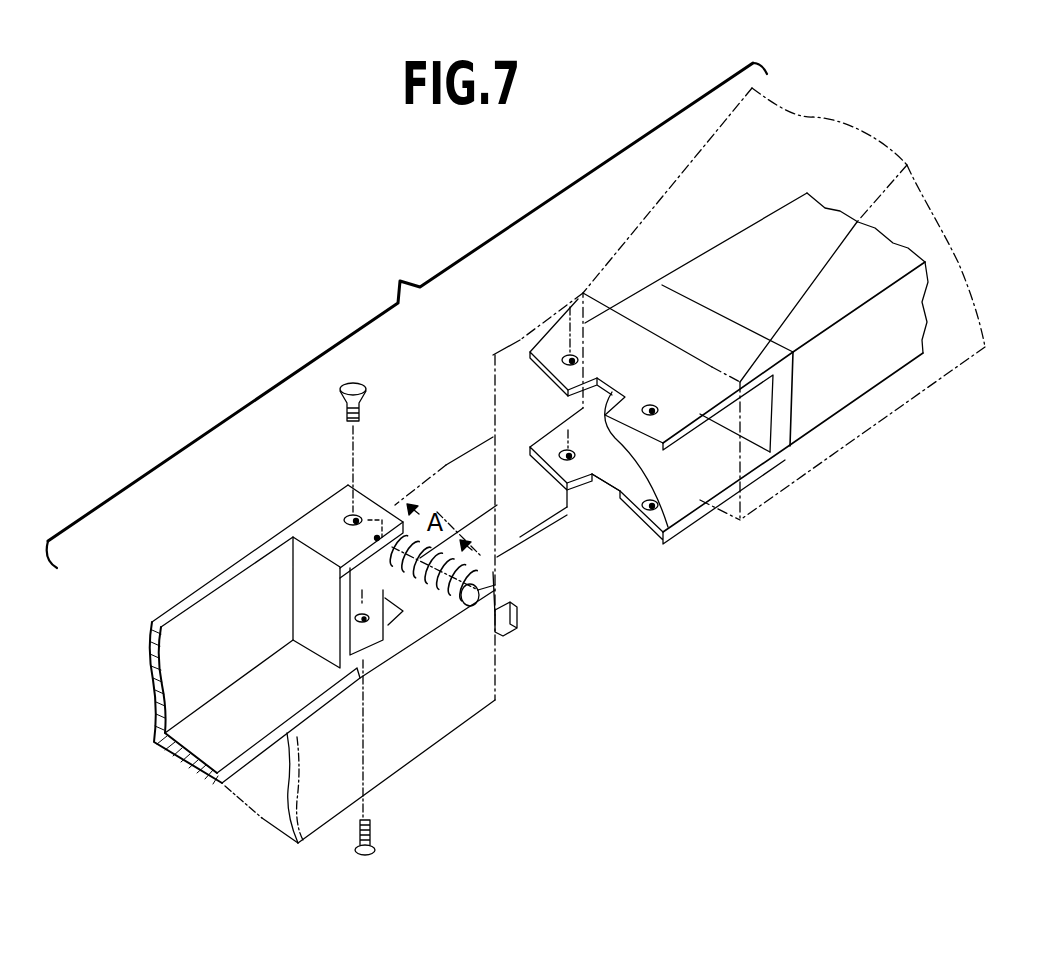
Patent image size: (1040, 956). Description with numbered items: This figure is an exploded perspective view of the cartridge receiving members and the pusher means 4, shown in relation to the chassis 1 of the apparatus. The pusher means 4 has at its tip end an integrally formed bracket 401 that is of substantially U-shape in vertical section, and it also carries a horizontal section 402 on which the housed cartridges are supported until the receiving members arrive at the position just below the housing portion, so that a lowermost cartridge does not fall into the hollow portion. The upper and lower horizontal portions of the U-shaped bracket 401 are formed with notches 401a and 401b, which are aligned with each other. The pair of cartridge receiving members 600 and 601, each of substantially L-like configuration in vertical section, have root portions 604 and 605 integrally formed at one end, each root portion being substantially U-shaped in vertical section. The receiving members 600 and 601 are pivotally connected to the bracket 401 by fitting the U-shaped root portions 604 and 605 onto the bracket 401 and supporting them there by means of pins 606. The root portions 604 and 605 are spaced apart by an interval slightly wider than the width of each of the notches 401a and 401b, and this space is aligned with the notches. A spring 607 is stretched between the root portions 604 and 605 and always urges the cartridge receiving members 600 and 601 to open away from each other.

The chassis 1 is at (827, 117).
The pusher means 4 is at (830, 428).
The bracket 401 is at (765, 468).
The notch 401a is at (668, 527).
The notch 401b is at (592, 481).
The horizontal section 402 is at (845, 291).
The cartridge receiving member 600 is at (206, 576).
The cartridge receiving member 601 is at (415, 766).
The root portion 604 is at (322, 513).
The root portion 605 is at (507, 567).
The pin 606 is at (362, 381).
The spring 607 is at (483, 568).